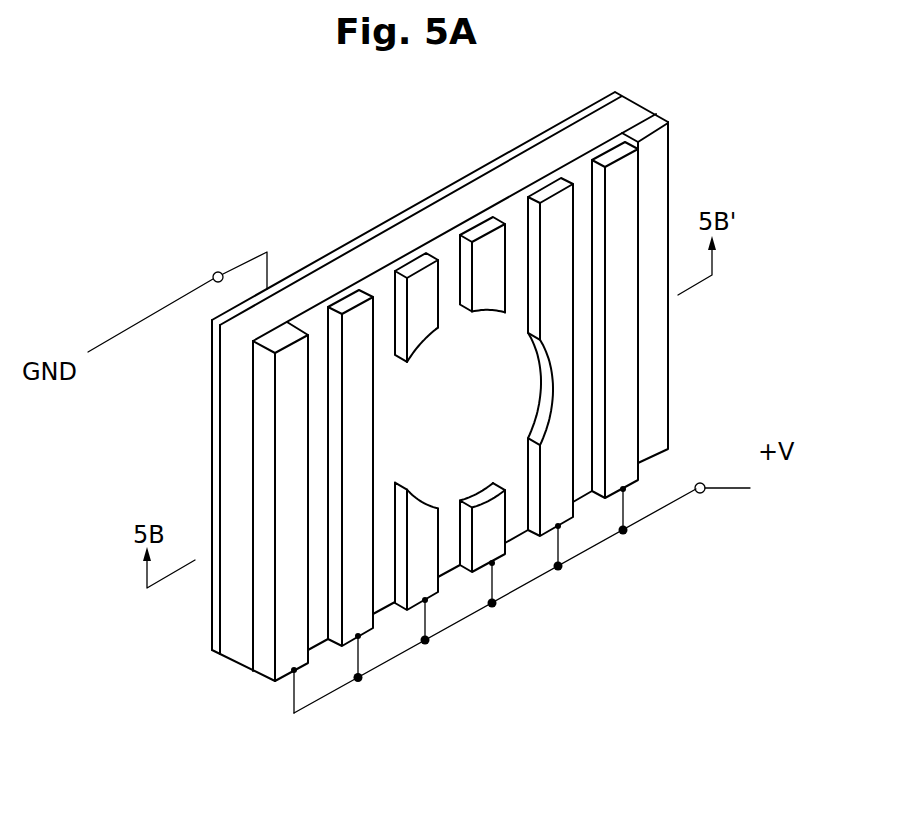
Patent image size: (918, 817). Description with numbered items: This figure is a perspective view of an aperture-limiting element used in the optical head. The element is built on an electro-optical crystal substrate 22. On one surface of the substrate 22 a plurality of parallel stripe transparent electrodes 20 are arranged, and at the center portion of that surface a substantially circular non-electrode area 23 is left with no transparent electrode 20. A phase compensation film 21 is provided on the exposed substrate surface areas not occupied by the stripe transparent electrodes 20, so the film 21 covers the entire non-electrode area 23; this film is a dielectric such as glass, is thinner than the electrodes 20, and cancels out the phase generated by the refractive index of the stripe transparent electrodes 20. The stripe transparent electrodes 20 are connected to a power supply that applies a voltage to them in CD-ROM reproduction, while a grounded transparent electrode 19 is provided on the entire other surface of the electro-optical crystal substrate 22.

The grounded transparent electrode 19 is at (492, 165).
The stripe transparent electrode 20 is at (628, 177).
The phase compensation film 21 is at (668, 364).
The electro-optical crystal substrate 22 is at (233, 610).
The non-electrode area 23 is at (462, 410).